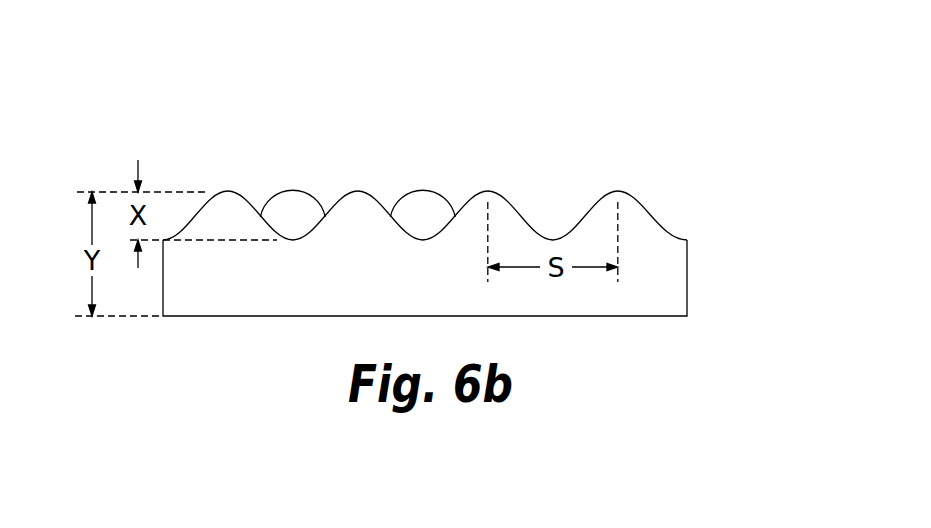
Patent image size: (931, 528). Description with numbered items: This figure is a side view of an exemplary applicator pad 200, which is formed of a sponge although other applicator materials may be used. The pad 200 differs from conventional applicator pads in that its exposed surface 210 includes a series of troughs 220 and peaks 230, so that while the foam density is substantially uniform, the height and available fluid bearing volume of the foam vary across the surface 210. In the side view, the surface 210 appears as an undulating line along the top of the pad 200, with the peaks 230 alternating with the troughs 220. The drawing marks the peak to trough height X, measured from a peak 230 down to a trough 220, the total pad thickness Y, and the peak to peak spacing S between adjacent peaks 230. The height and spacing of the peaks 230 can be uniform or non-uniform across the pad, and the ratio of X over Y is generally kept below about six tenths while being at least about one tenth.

The pad 200 is at (706, 258).
The exposed surface 210 is at (653, 210).
The troughs 220 is at (293, 240).
The peaks 230 is at (358, 191).